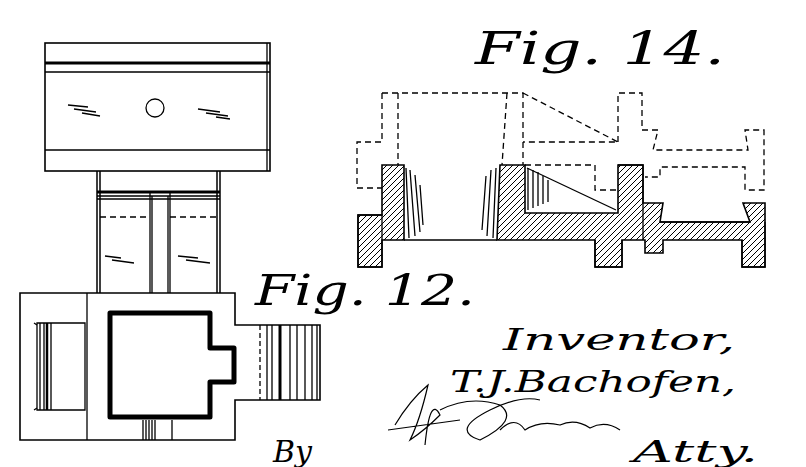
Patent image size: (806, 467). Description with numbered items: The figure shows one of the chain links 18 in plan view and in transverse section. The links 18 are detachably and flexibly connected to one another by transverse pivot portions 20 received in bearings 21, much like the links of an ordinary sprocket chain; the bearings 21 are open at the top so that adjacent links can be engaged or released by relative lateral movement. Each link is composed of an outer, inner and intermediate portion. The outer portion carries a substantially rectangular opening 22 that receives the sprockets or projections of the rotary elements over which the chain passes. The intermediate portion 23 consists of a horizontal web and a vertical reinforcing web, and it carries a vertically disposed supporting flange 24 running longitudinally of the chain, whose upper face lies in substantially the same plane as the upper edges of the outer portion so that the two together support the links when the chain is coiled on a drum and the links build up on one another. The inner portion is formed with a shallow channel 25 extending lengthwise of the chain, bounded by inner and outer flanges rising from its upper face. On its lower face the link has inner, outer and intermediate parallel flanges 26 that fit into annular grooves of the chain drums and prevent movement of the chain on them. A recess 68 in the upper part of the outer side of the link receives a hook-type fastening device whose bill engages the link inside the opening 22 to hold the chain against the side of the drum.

In FIG. 12, the link 18 is at (146, 34).
In FIG. 14, the link 18 is at (507, 258).
In FIG. 12, the transverse pivot portion 20 is at (42, 393).
In FIG. 12, the bearing 21 is at (284, 392).
In FIG. 12, the rectangular opening 22 is at (172, 365).
In FIG. 14, the rectangular opening 22 is at (433, 178).
In FIG. 12, the intermediate portion 23 is at (97, 258).
In FIG. 14, the intermediate portion 23 is at (572, 232).
In FIG. 12, the supporting flange 24 is at (205, 181).
In FIG. 14, the supporting flange 24 is at (688, 128).
In FIG. 12, the shallow channel 25 is at (245, 143).
In FIG. 14, the shallow channel 25 is at (660, 211).
In FIG. 14, the parallel flange 26 is at (383, 258).
In FIG. 12, the recess 68 is at (160, 420).